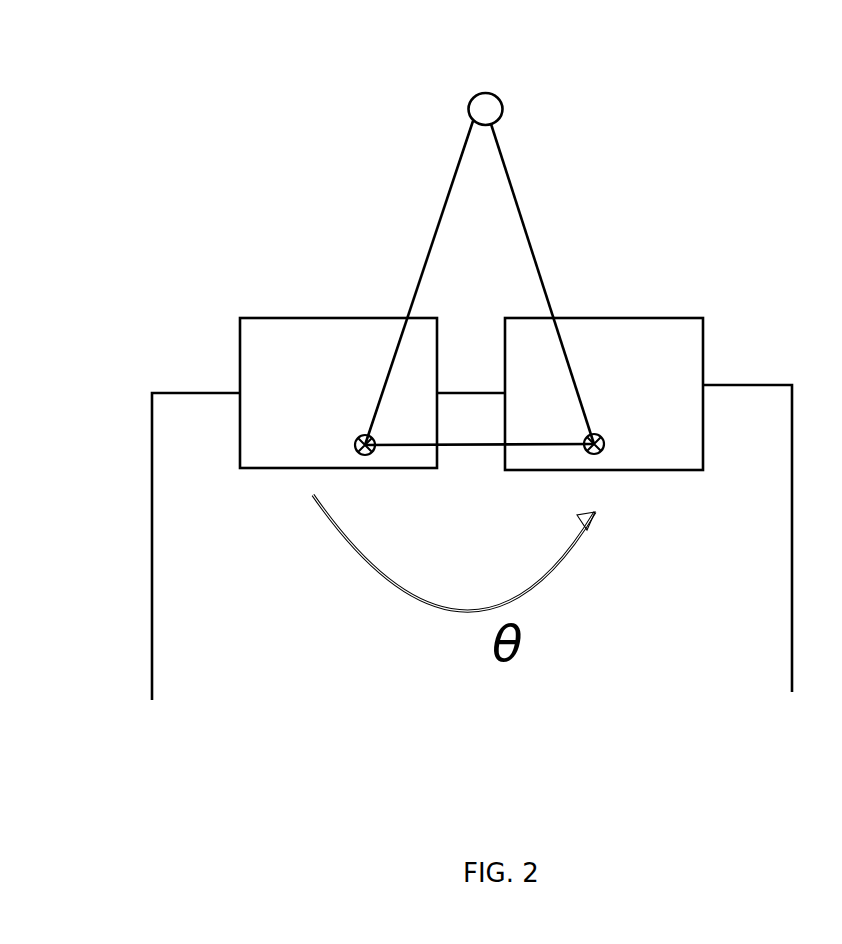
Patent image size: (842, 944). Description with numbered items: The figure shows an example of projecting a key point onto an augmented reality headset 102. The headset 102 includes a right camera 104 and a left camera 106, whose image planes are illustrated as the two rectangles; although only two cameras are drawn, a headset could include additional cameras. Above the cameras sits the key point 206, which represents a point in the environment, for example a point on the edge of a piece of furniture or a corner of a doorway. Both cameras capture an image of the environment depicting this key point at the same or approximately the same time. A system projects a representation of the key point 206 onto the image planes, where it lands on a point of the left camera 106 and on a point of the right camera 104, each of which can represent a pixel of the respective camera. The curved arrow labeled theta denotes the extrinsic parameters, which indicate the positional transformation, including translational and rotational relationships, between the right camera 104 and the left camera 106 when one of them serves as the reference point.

The augmented reality headset 102 is at (180, 223).
The right camera 104 is at (703, 347).
The left camera 106 is at (240, 346).
The key point x1 206 is at (502, 108).